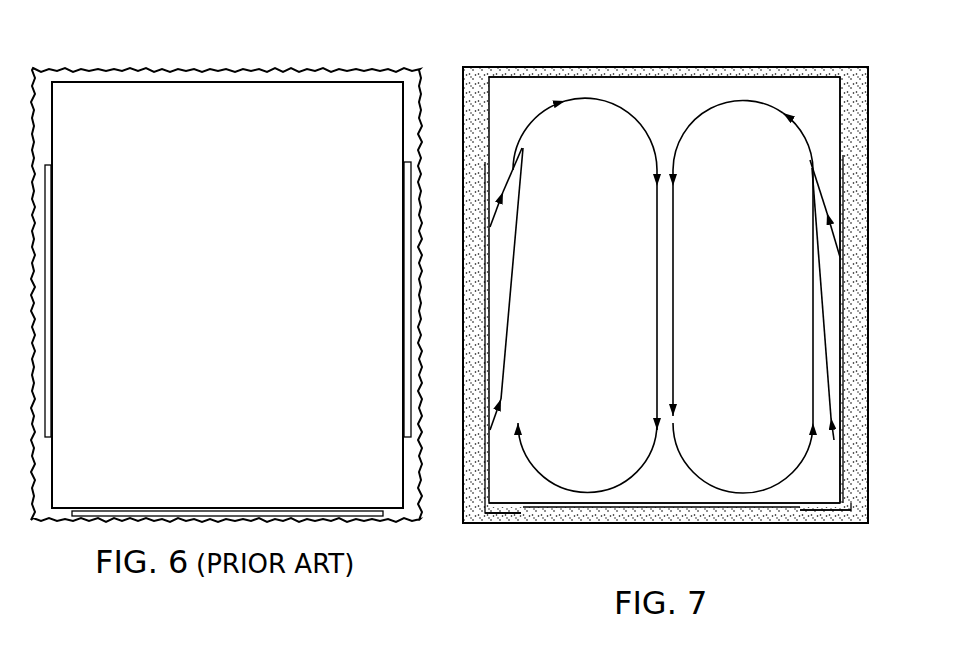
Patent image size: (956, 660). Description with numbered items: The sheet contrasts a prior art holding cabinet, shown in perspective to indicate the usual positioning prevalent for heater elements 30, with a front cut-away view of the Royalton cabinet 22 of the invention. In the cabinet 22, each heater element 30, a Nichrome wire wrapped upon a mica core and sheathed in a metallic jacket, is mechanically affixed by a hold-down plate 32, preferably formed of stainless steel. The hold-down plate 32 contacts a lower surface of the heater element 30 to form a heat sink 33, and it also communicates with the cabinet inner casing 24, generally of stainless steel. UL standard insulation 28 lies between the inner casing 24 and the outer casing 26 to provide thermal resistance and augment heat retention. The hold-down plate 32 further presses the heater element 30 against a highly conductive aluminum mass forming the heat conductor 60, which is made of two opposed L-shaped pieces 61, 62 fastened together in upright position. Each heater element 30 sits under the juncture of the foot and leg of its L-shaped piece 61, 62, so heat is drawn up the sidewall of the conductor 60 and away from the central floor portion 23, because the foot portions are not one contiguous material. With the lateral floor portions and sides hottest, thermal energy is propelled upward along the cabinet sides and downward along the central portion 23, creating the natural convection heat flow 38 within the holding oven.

In FIG. 7, the cabinet 22 is at (724, 173).
In FIG. 7, the central floor portion 23 is at (668, 497).
In FIG. 7, the inner casing 24 is at (482, 107).
In FIG. 7, the outer casing 26 is at (461, 498).
In FIG. 7, the insulation 28 is at (862, 447).
In FIG. 6, the heater element 30 is at (402, 194).
In FIG. 7, the hold-down plate 32 is at (493, 521).
In FIG. 7, the heat sink 33 is at (514, 525).
In FIG. 7, the natural convection heat flow 38 is at (526, 163).
In FIG. 7, the heat conductor 60 is at (487, 359).
In FIG. 7, the L-shaped piece 61 is at (478, 526).
In FIG. 7, the L-shaped piece 62 is at (852, 518).